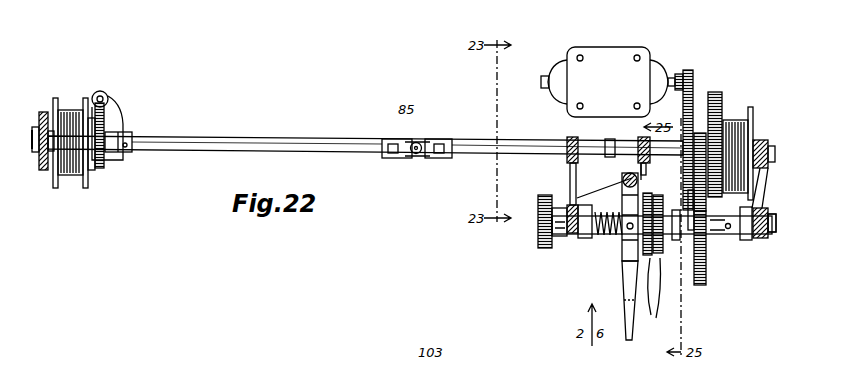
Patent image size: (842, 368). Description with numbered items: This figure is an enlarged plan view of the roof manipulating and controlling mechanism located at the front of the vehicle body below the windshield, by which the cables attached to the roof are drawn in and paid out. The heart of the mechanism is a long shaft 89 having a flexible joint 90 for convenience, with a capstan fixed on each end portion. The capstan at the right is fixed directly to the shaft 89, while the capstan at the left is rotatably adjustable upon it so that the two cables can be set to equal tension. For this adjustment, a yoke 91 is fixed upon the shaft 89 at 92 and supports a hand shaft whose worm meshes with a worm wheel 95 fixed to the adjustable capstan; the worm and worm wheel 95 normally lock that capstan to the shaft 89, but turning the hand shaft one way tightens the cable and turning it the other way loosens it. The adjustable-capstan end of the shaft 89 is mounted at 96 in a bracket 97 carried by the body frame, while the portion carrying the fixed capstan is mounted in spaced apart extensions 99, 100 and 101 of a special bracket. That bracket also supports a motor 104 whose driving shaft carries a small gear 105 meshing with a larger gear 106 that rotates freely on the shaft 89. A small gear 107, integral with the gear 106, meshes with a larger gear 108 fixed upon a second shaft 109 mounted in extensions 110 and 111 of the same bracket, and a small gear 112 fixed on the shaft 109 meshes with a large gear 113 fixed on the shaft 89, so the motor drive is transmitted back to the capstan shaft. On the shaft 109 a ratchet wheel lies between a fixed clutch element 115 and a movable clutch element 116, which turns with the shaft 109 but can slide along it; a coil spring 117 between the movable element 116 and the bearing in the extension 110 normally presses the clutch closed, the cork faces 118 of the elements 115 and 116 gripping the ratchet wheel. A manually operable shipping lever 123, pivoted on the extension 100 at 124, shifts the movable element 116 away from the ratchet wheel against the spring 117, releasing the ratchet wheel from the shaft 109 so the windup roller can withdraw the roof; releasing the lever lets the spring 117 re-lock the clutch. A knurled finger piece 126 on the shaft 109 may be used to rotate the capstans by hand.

The shaft 89 is at (275, 148).
The flexible joint 90 is at (420, 160).
The yoke 91 is at (113, 117).
The yoke fixing point 92 is at (125, 152).
The worm wheel 95 is at (98, 172).
The shaft end mounting 96 is at (35, 140).
The bracket 97 is at (42, 170).
The bracket extension 99 is at (568, 138).
The bracket extension 100 is at (640, 140).
The bracket extension 101 is at (770, 140).
The motor 104 is at (660, 40).
The small gear 105 is at (691, 72).
The larger gear 106 is at (683, 68).
The small gear 107 is at (700, 133).
The larger gear 108 is at (703, 280).
The shaft 109 is at (687, 267).
The bracket extension 110 is at (578, 243).
The bracket extension 111 is at (765, 233).
The small gear 112 is at (712, 240).
The large gear 113 is at (723, 97).
The fixed clutch element 115 is at (680, 280).
The movable clutch element 116 is at (617, 190).
The coil spring 117 is at (608, 247).
The cork faces 118 is at (648, 300).
The shipping lever 123 is at (620, 340).
The shipping lever pivot 124 is at (610, 150).
The knurled finger piece 126 is at (540, 248).